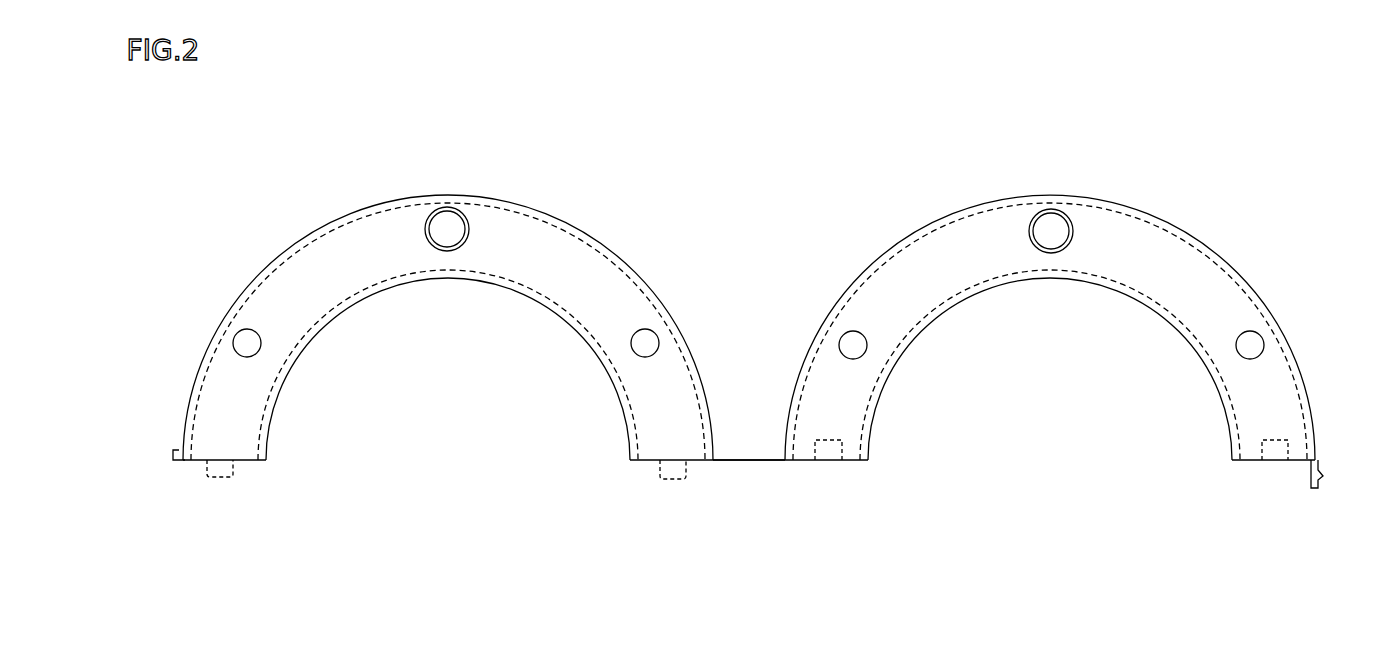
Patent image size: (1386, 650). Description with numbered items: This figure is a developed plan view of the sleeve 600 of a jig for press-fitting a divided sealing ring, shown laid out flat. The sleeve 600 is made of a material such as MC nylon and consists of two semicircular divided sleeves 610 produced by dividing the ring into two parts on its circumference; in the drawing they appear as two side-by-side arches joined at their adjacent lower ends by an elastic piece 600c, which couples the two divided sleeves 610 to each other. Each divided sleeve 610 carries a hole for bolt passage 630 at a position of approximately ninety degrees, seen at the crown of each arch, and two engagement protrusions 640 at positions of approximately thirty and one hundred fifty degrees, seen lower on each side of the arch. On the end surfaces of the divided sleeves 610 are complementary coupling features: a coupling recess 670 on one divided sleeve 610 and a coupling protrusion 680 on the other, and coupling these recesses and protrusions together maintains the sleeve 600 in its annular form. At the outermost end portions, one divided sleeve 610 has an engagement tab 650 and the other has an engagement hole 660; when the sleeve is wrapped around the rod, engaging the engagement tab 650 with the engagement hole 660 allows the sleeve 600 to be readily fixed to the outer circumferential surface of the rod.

The sleeve 600 is at (1272, 184).
The elastic piece 600c is at (752, 458).
The divided sleeve 610 is at (570, 262).
The hole for bolt passage 630 is at (457, 207).
The engagement protrusion 640 is at (236, 338).
The engagement tab 650 is at (1322, 478).
The engagement hole 660 is at (173, 452).
The coupling recess 670 is at (826, 462).
The coupling protrusion 680 is at (222, 472).